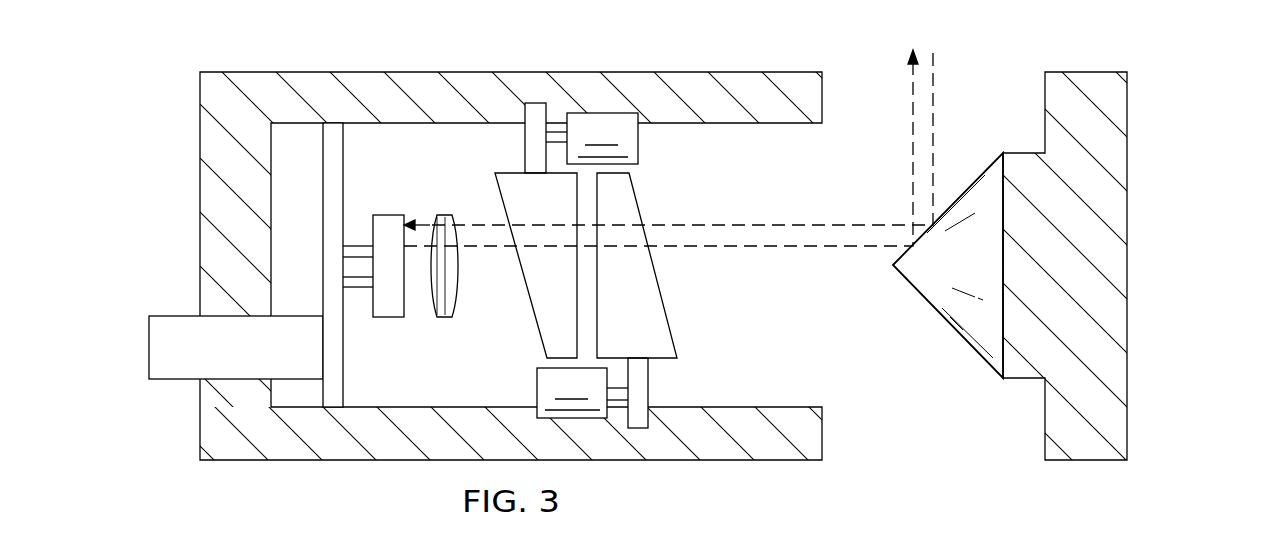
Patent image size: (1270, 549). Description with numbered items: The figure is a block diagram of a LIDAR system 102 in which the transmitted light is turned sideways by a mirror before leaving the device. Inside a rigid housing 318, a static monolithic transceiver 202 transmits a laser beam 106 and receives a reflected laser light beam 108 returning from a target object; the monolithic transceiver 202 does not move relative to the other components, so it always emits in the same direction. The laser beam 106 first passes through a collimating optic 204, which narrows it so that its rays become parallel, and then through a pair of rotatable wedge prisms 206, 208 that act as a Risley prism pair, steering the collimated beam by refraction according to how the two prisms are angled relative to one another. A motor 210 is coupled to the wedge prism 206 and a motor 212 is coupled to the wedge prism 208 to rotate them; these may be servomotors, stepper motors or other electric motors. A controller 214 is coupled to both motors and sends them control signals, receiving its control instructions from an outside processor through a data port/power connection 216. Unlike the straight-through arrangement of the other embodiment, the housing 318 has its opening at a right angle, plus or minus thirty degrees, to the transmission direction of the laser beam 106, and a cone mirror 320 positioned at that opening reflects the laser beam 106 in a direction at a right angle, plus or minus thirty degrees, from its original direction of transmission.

The LIDAR system 102 is at (1205, 78).
The laser beam 106 is at (912, 120).
The reflected laser light beam 108 is at (932, 125).
The monolithic transceiver 202 is at (388, 213).
The collimating optic 204 is at (440, 213).
The wedge prism 206 is at (534, 298).
The wedge prism 208 is at (657, 301).
The motor 210 is at (630, 139).
The motor 212 is at (544, 391).
The controller 214 is at (336, 338).
The data port/power connection 216 is at (156, 350).
The housing 318 is at (814, 435).
The cone mirror 320 is at (951, 318).